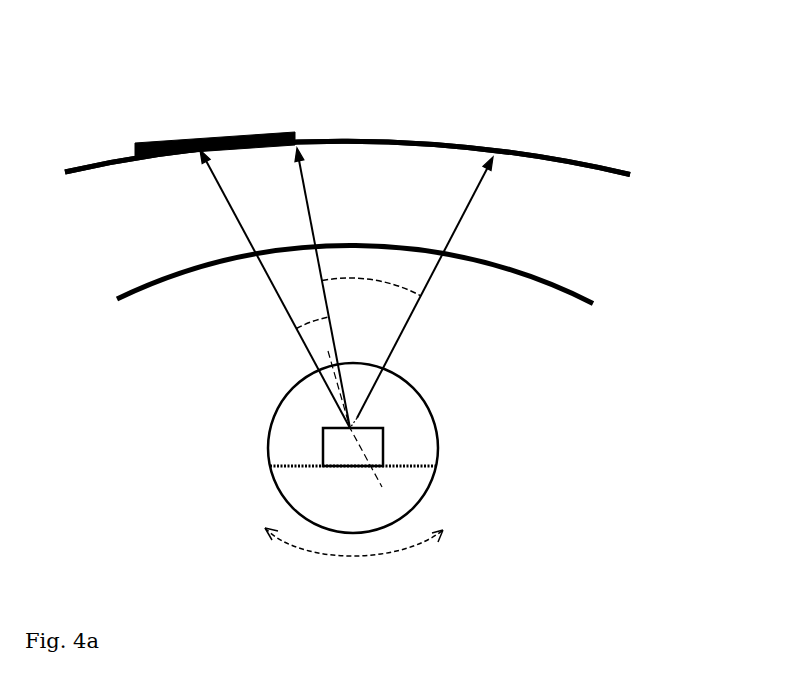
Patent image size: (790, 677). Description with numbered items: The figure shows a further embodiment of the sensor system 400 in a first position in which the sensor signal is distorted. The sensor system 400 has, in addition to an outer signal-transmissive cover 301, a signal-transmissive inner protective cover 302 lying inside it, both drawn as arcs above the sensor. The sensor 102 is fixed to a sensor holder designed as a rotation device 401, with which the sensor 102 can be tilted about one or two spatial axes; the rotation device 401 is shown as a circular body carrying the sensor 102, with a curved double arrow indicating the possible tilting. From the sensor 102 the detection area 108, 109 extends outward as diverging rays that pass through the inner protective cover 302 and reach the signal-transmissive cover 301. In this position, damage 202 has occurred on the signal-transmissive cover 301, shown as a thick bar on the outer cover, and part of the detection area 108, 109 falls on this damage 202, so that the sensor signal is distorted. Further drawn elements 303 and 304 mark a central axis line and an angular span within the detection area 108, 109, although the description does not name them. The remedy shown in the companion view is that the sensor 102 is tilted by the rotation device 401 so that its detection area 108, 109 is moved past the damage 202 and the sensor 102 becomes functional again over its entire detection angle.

The sensor system 400 is at (538, 147).
The signal-transmissive cover 301 is at (343, 149).
The damage 202 is at (250, 152).
The signal-transmissive inner protective cover 302 is at (188, 264).
The detection area 108 is at (282, 308).
The detection area 109 is at (435, 275).
The optical axis 303 is at (315, 322).
The scan angle 304 is at (392, 288).
The rotation device 401 is at (273, 480).
The sensor 102 is at (402, 453).